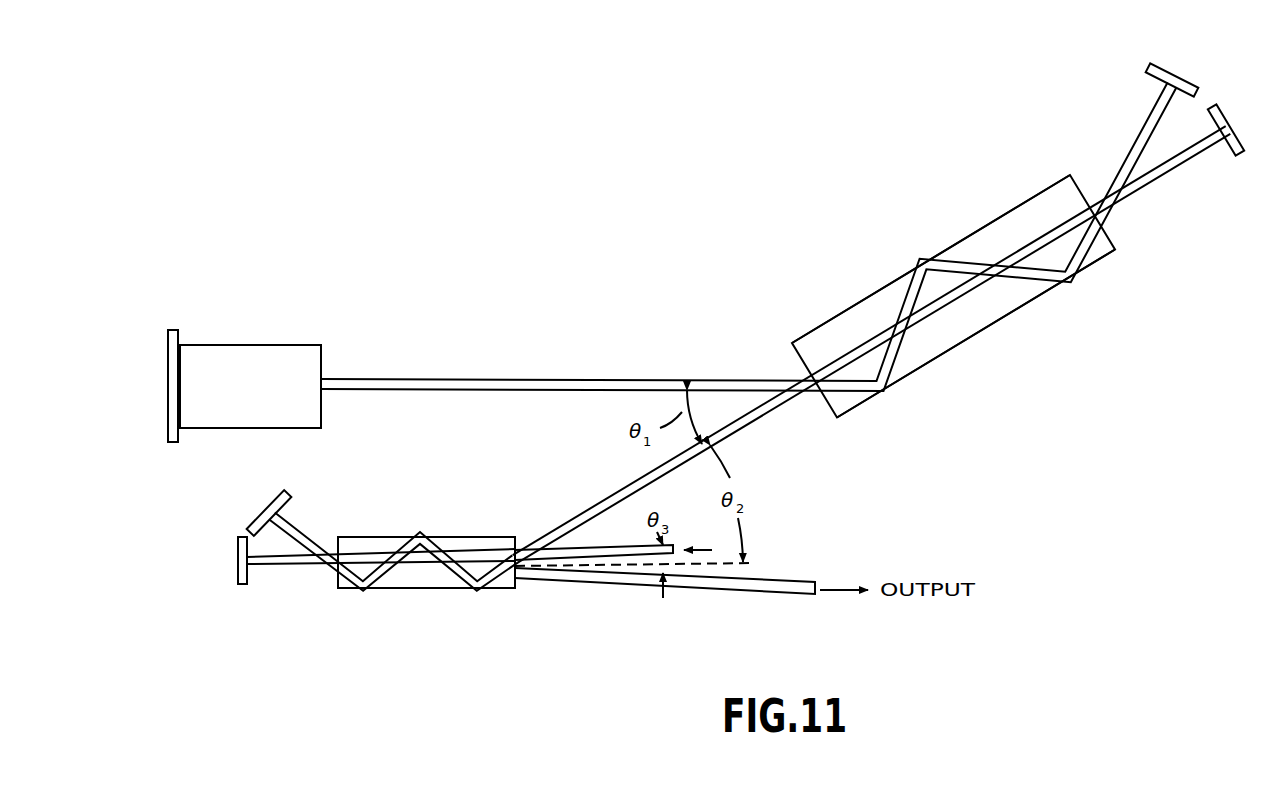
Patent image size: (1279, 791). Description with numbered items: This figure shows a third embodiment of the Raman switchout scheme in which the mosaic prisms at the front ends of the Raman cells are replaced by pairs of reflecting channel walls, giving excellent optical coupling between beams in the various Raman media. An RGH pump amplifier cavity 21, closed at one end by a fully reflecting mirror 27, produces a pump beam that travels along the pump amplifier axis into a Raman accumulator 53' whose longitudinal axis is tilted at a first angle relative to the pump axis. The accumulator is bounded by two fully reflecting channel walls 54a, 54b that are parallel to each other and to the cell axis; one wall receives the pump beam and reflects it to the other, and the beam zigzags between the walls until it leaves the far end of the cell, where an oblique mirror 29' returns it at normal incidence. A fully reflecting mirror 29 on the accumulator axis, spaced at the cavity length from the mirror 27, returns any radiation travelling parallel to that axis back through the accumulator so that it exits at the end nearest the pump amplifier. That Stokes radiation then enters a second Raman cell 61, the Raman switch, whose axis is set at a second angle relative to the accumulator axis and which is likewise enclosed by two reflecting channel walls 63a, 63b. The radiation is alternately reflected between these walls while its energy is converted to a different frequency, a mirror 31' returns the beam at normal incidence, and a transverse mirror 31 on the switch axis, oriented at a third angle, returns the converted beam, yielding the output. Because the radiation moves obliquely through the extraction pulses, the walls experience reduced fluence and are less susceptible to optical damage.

The RGH pump amplifier cavity 21 is at (266, 328).
The fully reflecting mirror 27 is at (168, 424).
The fully reflecting mirror 29 is at (1241, 127).
The transverse fully reflecting mirror 29' is at (1172, 63).
The accumulator mirror 31 is at (215, 566).
The transverse fully reflecting mirror 31' is at (263, 501).
The Raman accumulator 53' is at (1022, 296).
The reflecting channel wall 54a is at (904, 383).
The reflecting channel wall 54b is at (824, 323).
The second Raman cell 61 is at (334, 590).
The reflecting channel wall 63a is at (505, 589).
The reflecting channel wall 63b is at (449, 537).